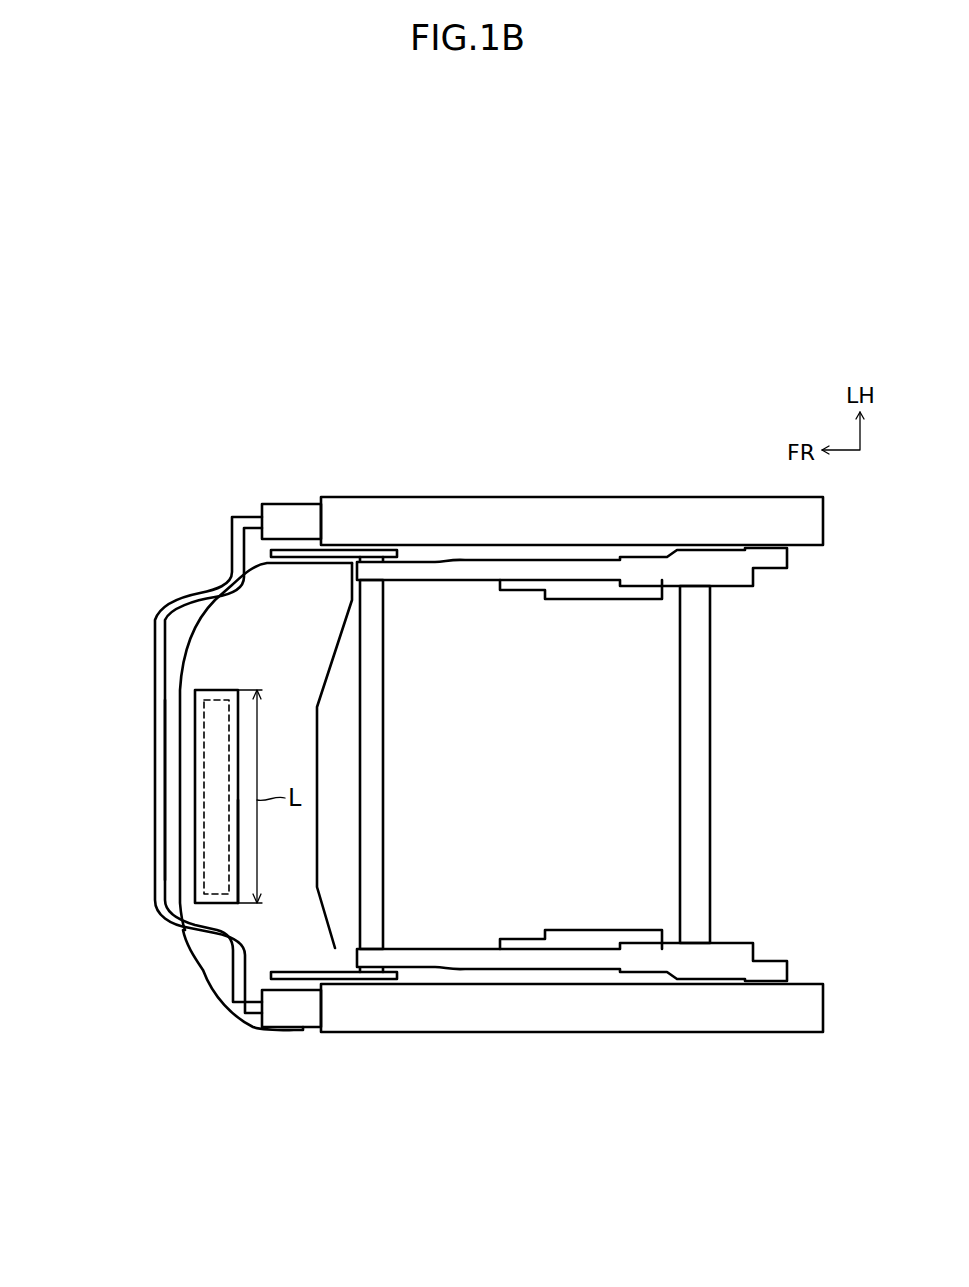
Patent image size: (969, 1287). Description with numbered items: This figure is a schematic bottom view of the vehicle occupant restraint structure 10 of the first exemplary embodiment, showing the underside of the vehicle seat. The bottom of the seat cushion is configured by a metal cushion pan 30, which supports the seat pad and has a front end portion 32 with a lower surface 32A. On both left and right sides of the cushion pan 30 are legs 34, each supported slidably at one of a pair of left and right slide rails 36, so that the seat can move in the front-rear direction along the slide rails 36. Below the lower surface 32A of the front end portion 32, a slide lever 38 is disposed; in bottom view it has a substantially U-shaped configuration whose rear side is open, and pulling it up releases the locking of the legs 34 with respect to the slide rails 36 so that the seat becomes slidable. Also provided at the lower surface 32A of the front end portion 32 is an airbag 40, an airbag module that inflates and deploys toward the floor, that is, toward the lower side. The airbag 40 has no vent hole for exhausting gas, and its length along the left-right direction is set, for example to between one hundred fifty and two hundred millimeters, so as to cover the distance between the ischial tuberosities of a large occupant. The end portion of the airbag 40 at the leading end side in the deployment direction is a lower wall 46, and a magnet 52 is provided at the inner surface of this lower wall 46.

The vehicle occupant restraint structure 10 is at (199, 779).
The cushion pan 30 is at (200, 988).
The front end portion 32 is at (185, 643).
The lower surface 32A is at (187, 818).
The legs 34 is at (299, 518).
The slide rails 36 is at (597, 518).
The slide lever 38 is at (155, 673).
The airbag 40 is at (213, 687).
The lower wall 46 is at (213, 850).
The magnet 52 is at (217, 780).